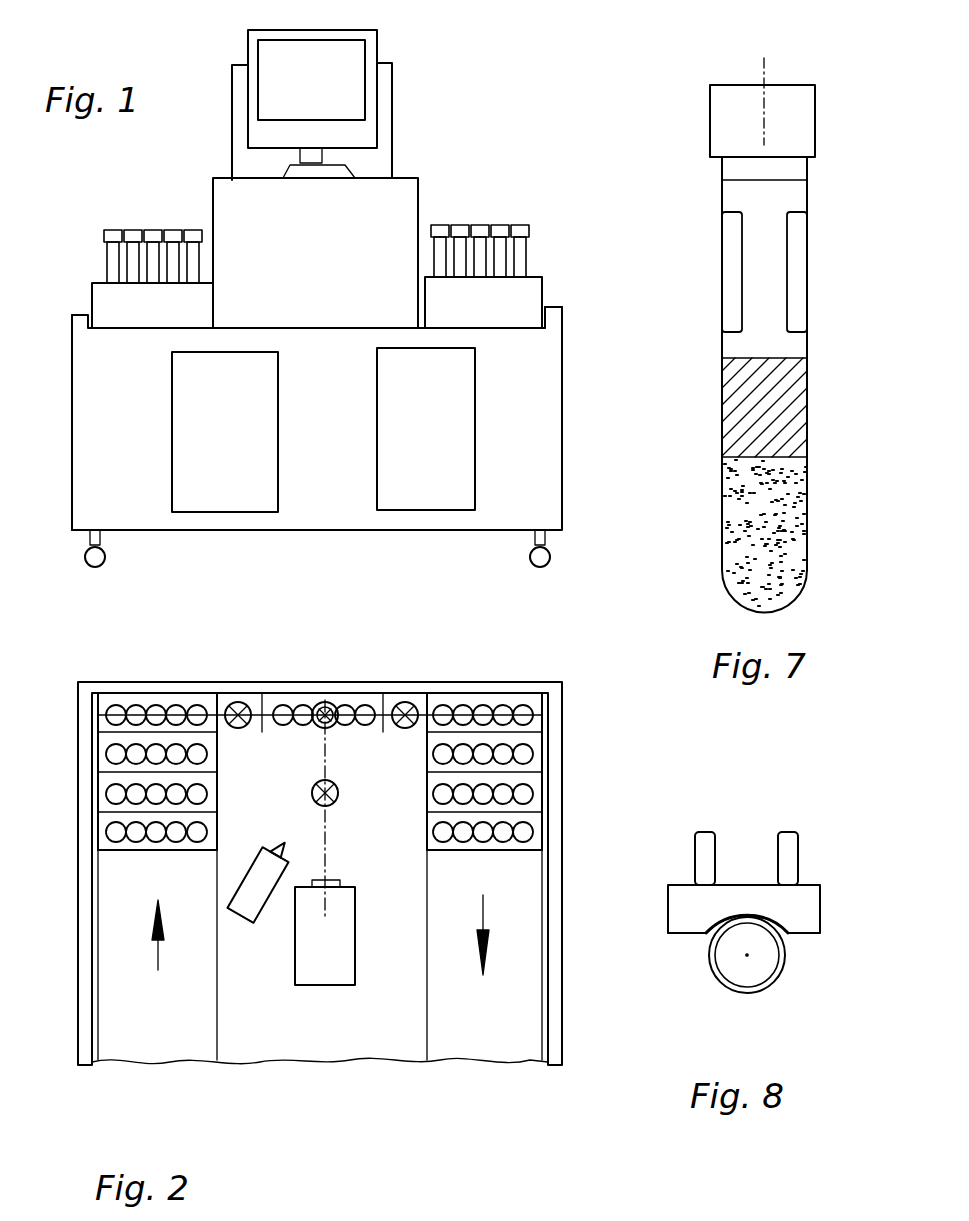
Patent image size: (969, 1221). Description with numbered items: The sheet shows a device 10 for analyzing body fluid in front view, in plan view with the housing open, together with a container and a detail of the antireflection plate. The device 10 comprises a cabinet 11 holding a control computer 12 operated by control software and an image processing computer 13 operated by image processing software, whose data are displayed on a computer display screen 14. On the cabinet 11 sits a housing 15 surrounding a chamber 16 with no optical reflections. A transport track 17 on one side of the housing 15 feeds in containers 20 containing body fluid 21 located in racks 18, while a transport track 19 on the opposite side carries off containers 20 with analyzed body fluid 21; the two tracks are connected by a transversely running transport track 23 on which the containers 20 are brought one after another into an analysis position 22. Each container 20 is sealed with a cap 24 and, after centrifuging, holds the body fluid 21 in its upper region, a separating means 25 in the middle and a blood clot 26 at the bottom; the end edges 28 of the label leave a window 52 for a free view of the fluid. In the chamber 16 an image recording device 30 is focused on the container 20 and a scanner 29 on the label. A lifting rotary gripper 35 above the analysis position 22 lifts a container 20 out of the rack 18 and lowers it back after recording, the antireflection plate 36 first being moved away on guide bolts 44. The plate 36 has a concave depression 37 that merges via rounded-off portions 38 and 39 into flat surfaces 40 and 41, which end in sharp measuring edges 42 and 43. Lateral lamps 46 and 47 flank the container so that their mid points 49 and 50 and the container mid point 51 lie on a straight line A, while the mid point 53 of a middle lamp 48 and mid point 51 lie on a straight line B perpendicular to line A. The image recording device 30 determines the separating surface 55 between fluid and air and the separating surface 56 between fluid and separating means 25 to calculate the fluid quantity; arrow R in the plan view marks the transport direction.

In FIG. 1, the device for analyzing body fluid 10 is at (492, 113).
In FIG. 1, the cabinet 11 is at (545, 415).
In FIG. 1, the control computer 12 is at (228, 495).
In FIG. 1, the image processing computer 13 is at (432, 483).
In FIG. 1, the computer display screen 14 is at (358, 50).
In FIG. 1, the housing 15 is at (400, 195).
In FIG. 2, the housing 15 is at (550, 716).
In FIG. 2, the chamber 16 is at (392, 1000).
In FIG. 1, the transport track 17 is at (125, 322).
In FIG. 2, the transport track 17 is at (153, 1043).
In FIG. 1, the racks 18 is at (120, 300).
In FIG. 2, the racks 18 is at (120, 766).
In FIG. 1, the transport track 19 is at (505, 315).
In FIG. 2, the transport track 19 is at (483, 1040).
In FIG. 1, the container 20 is at (107, 256).
In FIG. 2, the container 20 is at (118, 830).
In FIG. 8, the container 20 is at (748, 965).
In FIG. 7, the body fluid 21 is at (742, 200).
In FIG. 2, the analysis position 22 is at (315, 705).
In FIG. 2, the transport track 23 is at (226, 699).
In FIG. 7, the cap 24 is at (727, 115).
In FIG. 7, the separating means 25 is at (745, 430).
In FIG. 7, the blood clot 26 is at (750, 523).
In FIG. 7, the end edges 28 is at (745, 243).
In FIG. 2, the scanner 29 is at (252, 915).
In FIG. 2, the image recording device 30 is at (330, 965).
In FIG. 2, the lifting rotary gripper 35 is at (325, 701).
In FIG. 8, the antireflection plate 36 is at (688, 905).
In FIG. 8, the concave depression 37 is at (742, 908).
In FIG. 8, the rounded-off portion 38 is at (702, 935).
In FIG. 8, the rounded-off portion 39 is at (791, 935).
In FIG. 8, the flat surface 40 is at (684, 935).
In FIG. 8, the flat surface 41 is at (801, 935).
In FIG. 8, the sharp edge 42 is at (676, 935).
In FIG. 8, the sharp edge 43 is at (812, 935).
In FIG. 8, the guide bolts 44 is at (790, 852).
In FIG. 2, the lateral lamp 46 is at (238, 701).
In FIG. 2, the lateral lamp 47 is at (411, 702).
In FIG. 2, the middle lamp 48 is at (312, 795).
In FIG. 2, the mid point 49 is at (240, 729).
In FIG. 2, the mid point 50 is at (407, 729).
In FIG. 7, the mid point 51 is at (766, 70).
In FIG. 2, the mid point 51 is at (336, 706).
In FIG. 7, the window 52 is at (766, 300).
In FIG. 2, the mid point 53 is at (338, 794).
In FIG. 7, the separating surface 55 is at (742, 172).
In FIG. 7, the separating surface 56 is at (745, 353).
In FIG. 2, the straight line A is at (440, 705).
In FIG. 2, the straight line B is at (330, 858).
In FIG. 2, the transport direction R is at (75, 656).